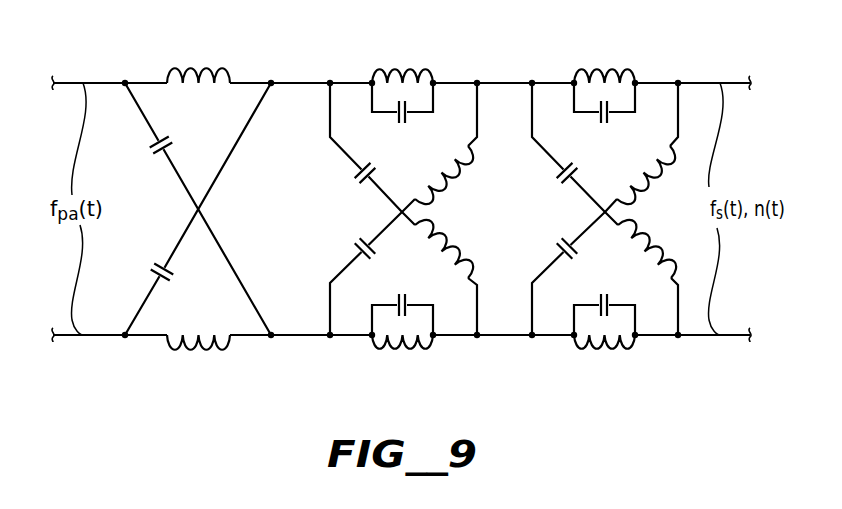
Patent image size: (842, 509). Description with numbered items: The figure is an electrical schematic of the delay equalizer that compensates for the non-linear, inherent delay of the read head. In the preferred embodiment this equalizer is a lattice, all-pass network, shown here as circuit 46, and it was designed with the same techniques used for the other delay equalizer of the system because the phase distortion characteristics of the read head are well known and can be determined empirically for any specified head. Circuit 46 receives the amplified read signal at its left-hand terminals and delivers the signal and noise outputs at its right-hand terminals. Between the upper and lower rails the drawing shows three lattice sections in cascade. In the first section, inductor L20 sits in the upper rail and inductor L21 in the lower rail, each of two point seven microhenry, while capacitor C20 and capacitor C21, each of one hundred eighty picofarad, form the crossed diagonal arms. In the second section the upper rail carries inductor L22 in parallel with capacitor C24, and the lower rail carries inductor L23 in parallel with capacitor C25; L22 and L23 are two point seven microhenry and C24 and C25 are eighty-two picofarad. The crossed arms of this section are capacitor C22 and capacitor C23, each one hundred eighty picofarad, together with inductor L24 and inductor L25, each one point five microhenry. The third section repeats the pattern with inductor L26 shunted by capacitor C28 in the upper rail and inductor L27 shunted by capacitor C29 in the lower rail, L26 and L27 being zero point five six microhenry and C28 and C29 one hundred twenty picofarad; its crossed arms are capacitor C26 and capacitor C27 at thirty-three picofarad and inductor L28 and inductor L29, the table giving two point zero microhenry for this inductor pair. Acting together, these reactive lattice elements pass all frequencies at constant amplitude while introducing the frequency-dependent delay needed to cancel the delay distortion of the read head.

The circuit 46 is at (271, 389).
The inductor L20 is at (198, 62).
The inductor L21 is at (198, 358).
The capacitor C20 is at (198, 209).
The capacitor C21 is at (198, 209).
The inductor L22 is at (402, 62).
The inductor L23 is at (402, 359).
The capacitor C22 is at (360, 147).
The capacitor C23 is at (360, 273).
The capacitor C24 is at (402, 115).
The capacitor C25 is at (402, 304).
The inductor L24 is at (446, 147).
The inductor L25 is at (446, 273).
The inductor L26 is at (604, 62).
The inductor L27 is at (604, 359).
The capacitor C26 is at (563, 147).
The capacitor C27 is at (563, 273).
The capacitor C28 is at (604, 115).
The capacitor C29 is at (604, 304).
The inductor L28 is at (648, 147).
The inductor L29 is at (648, 273).